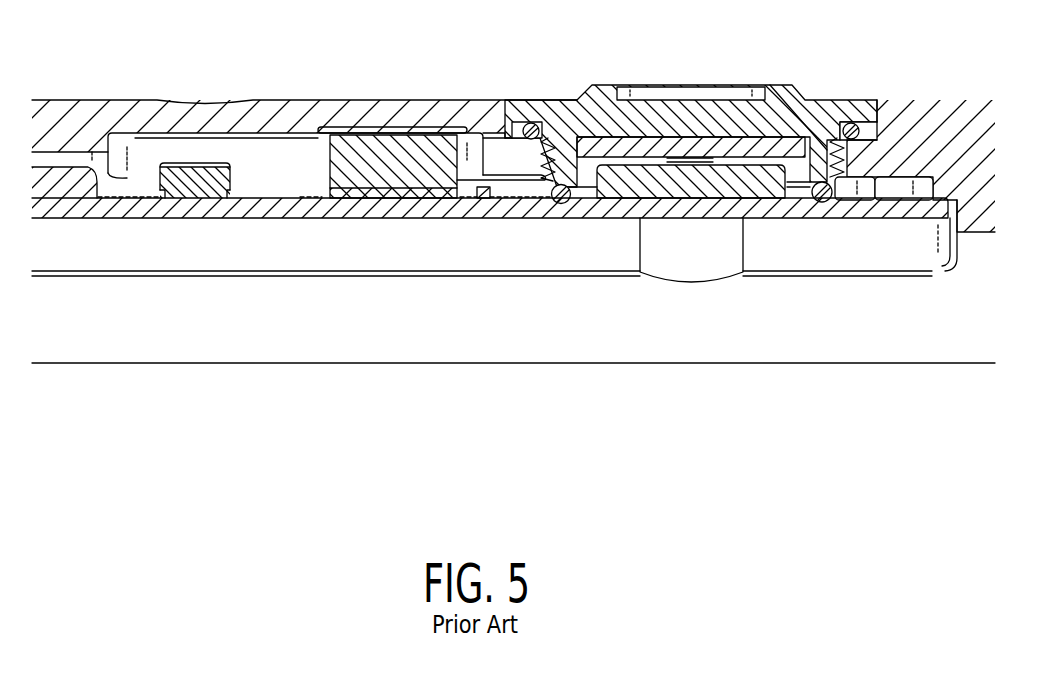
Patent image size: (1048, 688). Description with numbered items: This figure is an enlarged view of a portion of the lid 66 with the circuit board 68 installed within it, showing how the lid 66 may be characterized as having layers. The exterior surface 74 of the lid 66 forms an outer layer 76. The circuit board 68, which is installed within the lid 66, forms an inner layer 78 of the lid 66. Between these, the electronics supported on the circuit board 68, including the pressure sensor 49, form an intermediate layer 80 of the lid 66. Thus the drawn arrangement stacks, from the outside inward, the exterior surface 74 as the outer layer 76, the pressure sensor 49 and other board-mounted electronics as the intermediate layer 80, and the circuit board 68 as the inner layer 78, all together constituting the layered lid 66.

The pressure sensor 49 is at (192, 192).
The lid 66 is at (445, 100).
The circuit board 68 is at (860, 210).
The exterior surface 74 is at (110, 100).
The outer layer 76 is at (923, 100).
The inner layer 78 is at (803, 218).
The intermediate layer 80 is at (273, 163).